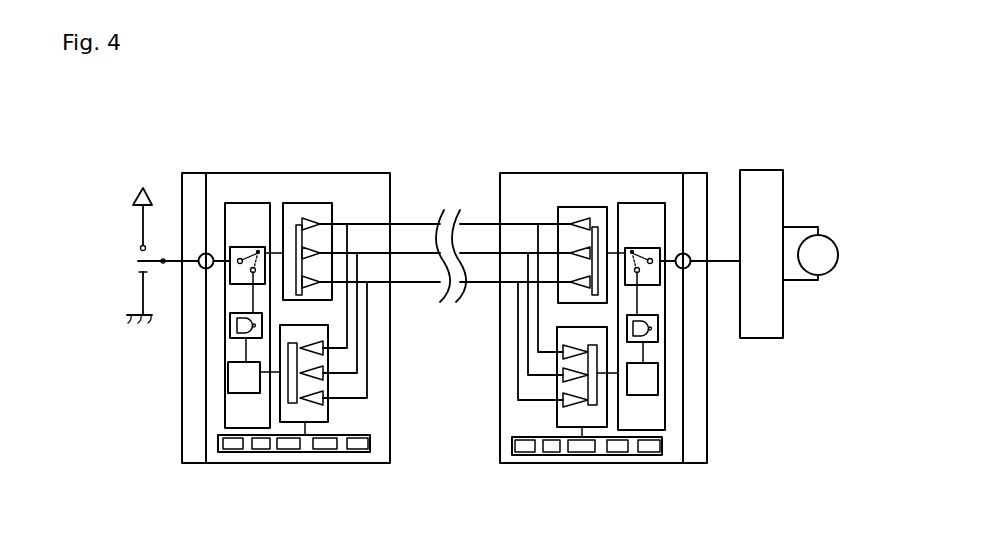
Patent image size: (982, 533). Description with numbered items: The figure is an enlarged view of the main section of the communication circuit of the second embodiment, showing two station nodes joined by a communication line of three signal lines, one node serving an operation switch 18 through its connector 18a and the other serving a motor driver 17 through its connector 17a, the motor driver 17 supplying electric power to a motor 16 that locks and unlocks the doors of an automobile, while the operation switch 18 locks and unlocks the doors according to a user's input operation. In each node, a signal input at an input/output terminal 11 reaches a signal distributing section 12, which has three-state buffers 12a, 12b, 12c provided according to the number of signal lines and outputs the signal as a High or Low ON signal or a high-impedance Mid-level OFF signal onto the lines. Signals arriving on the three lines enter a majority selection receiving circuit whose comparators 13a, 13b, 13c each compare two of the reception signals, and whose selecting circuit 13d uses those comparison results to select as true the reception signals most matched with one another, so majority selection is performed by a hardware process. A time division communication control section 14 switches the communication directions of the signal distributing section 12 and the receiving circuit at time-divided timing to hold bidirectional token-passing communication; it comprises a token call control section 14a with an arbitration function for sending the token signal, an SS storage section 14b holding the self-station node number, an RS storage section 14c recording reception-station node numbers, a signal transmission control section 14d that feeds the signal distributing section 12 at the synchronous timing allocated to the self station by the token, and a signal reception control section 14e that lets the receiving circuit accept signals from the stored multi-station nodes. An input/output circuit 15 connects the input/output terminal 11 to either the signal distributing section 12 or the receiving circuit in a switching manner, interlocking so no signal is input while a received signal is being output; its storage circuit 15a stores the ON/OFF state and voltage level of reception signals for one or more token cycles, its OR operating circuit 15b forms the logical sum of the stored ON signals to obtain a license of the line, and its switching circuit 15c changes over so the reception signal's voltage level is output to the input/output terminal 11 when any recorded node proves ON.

The input/output terminal 11 is at (208, 254).
The signal distributing section 12 is at (293, 213).
The three-state buffer 12a is at (305, 224).
The three-state buffer 12b is at (310, 253).
The three-state buffer 12c is at (312, 282).
The comparator 13a is at (327, 349).
The comparator 13b is at (328, 374).
The comparator 13c is at (328, 401).
The selecting circuit 13d is at (290, 406).
The time division communication control section 14 is at (300, 0).
The token call control section 14a is at (232, 452).
The SS storage section 14b is at (258, 452).
The RS storage section 14c is at (290, 452).
The signal transmission control section 14d is at (325, 452).
The signal reception control section 14e is at (362, 452).
The input/output circuit 15 is at (225, 428).
The storage circuit 15a is at (228, 393).
The OR operating circuit 15b is at (235, 340).
The switching circuit 15c is at (232, 286).
The motor 16 is at (822, 233).
The motor driver 17 is at (763, 170).
The connector 17a is at (696, 173).
The operation switch 18 is at (138, 252).
The connector 18a is at (198, 173).